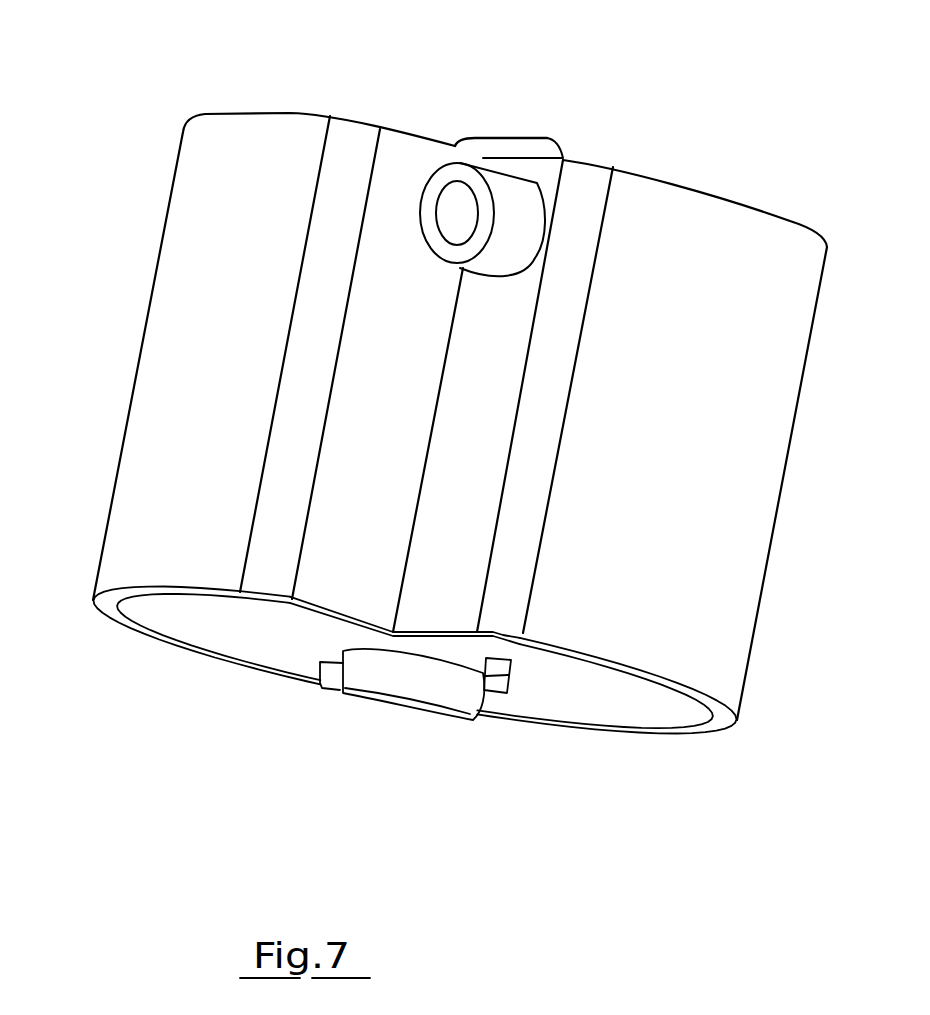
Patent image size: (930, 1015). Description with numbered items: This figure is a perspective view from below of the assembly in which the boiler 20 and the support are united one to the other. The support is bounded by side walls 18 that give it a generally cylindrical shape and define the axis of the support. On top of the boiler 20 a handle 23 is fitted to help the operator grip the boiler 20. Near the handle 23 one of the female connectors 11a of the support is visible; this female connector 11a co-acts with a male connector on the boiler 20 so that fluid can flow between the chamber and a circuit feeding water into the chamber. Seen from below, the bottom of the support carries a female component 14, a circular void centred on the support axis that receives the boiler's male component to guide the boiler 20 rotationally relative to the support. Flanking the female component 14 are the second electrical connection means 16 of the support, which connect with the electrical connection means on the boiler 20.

The female connector 11a is at (505, 197).
The female component 14 is at (463, 695).
The second electrical connection means 16 is at (322, 680).
The side walls 18 is at (167, 329).
The boiler 20 is at (572, 143).
The handle 23 is at (513, 147).